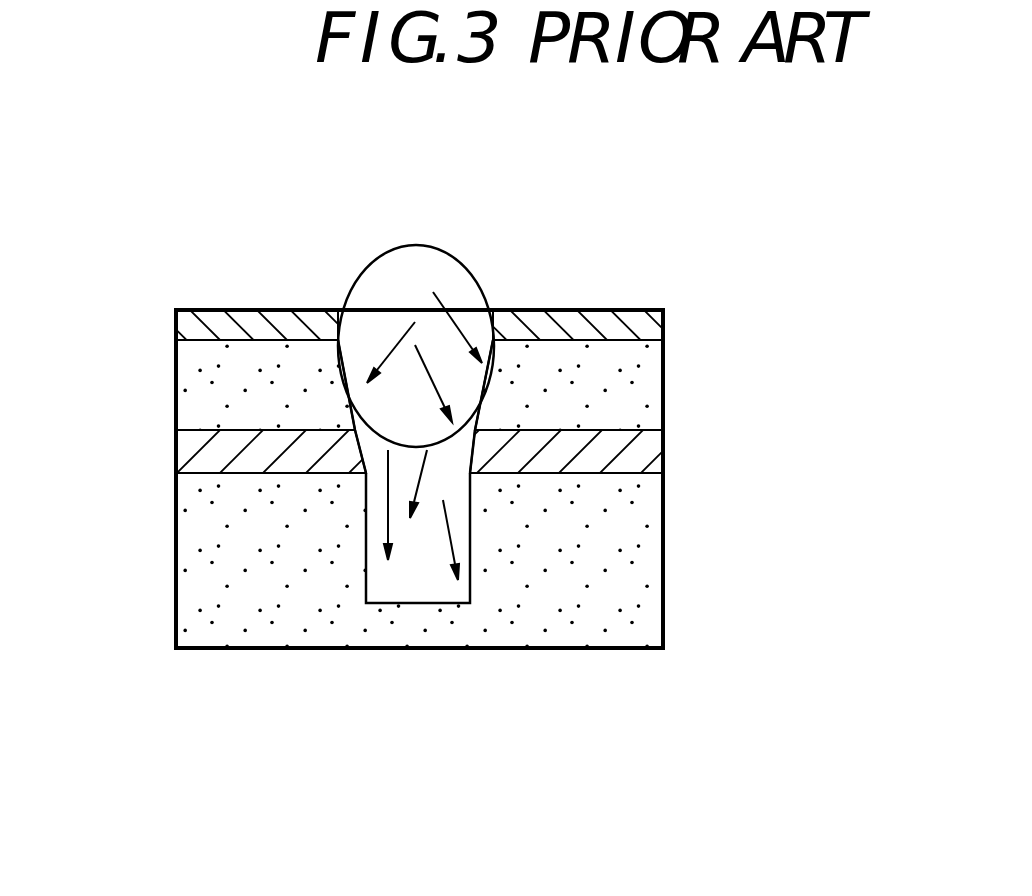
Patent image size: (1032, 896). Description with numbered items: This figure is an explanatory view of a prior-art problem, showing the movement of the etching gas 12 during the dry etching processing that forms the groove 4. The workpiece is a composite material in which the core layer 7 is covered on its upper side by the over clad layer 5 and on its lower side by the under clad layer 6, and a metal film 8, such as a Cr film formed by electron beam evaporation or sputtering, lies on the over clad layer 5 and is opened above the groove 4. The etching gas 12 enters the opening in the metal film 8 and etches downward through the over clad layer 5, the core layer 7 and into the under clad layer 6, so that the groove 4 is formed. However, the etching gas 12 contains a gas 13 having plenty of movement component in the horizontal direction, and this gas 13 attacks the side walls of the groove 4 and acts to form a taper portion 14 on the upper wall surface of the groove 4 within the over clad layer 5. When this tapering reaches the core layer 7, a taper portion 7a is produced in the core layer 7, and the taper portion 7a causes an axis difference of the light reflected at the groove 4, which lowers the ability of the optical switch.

The groove 4 is at (467, 517).
The over clad layer 5 is at (210, 398).
The under clad layer 6 is at (260, 618).
The core layer 7 is at (663, 449).
The taper portion 7a is at (470, 440).
The metal film 8 is at (650, 310).
The etching gas 12 is at (480, 310).
The gas 13 is at (348, 286).
The taper portion 14 is at (478, 388).